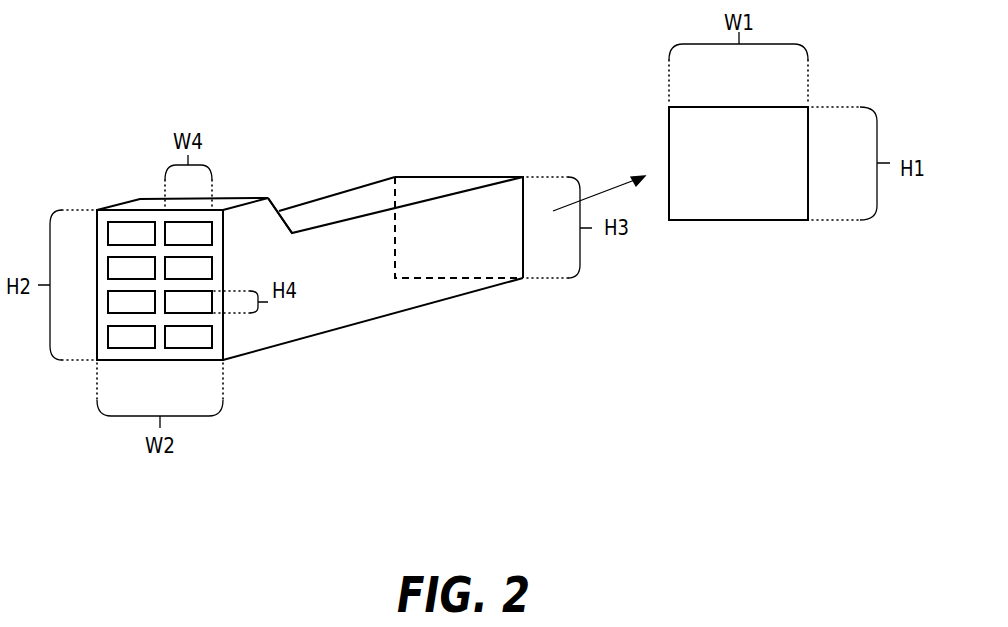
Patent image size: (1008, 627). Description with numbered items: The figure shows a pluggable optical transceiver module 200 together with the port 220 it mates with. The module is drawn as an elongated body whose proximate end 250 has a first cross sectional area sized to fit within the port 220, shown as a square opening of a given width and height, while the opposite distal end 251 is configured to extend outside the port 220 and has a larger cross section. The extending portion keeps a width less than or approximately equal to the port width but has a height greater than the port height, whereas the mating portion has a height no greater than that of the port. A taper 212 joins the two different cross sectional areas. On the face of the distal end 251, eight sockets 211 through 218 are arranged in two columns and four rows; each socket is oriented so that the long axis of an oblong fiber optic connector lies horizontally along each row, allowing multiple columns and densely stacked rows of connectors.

The pluggable optical transceiver module 200 is at (392, 317).
The socket 211 is at (138, 349).
The taper 212 is at (285, 221).
The socket 218 is at (120, 222).
The port 220 is at (787, 221).
The proximate end 250 is at (427, 176).
The distal end 251 is at (210, 361).